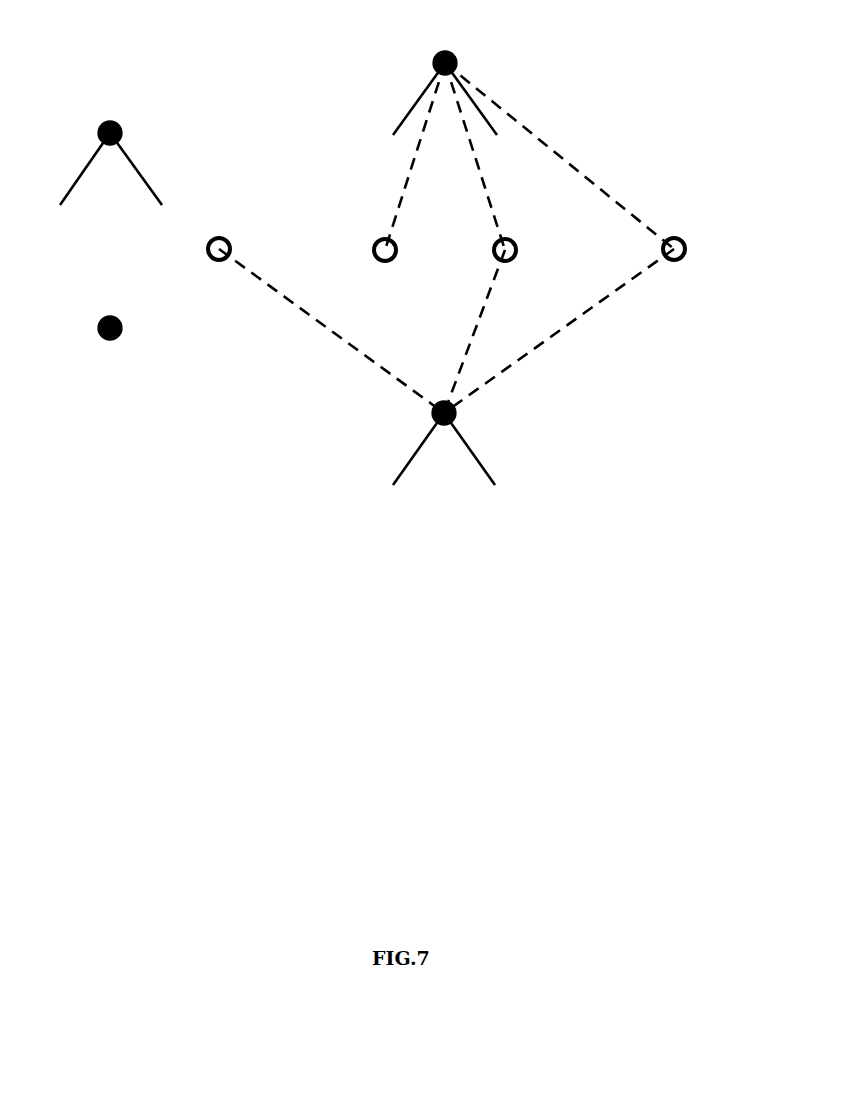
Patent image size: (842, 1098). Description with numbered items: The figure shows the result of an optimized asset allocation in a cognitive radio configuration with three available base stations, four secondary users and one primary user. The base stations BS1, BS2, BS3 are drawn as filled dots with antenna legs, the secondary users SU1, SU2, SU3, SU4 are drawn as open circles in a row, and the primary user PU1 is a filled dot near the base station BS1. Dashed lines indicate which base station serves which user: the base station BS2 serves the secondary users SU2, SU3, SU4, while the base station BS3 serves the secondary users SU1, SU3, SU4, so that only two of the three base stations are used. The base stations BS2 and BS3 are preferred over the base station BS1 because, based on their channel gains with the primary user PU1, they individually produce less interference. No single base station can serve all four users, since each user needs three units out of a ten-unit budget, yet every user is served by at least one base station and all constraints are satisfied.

The base station BS1 is at (111, 151).
The base station BS2 is at (445, 80).
The base station BS3 is at (444, 443).
The primary user PU1 is at (114, 342).
The secondary user SU1 is at (245, 248).
The secondary user SU2 is at (411, 249).
The secondary user SU3 is at (530, 249).
The secondary user SU4 is at (700, 248).